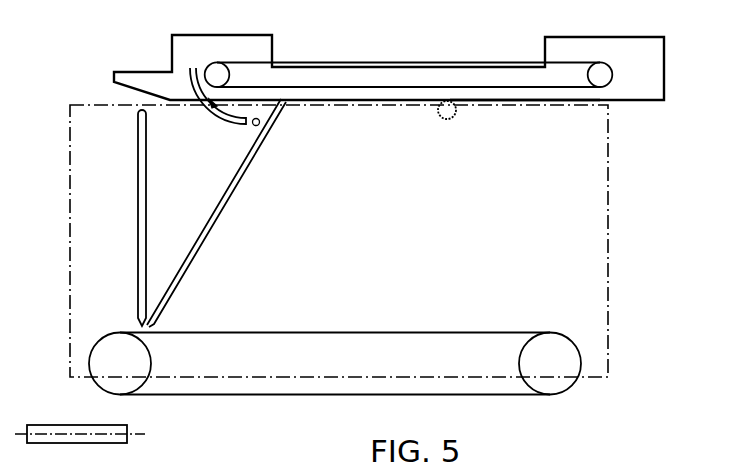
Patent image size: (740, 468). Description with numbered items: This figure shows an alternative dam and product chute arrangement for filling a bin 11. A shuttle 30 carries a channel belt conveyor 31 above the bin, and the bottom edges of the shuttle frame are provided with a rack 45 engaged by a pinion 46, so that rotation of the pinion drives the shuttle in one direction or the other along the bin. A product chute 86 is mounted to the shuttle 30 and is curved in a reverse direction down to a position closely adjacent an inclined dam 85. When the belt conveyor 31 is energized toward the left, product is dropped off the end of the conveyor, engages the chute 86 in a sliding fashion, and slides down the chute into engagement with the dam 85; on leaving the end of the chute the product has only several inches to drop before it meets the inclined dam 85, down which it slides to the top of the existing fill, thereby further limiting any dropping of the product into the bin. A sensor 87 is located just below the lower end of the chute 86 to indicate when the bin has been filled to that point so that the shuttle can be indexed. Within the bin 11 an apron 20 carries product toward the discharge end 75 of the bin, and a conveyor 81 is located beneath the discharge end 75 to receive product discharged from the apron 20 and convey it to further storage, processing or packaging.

The bin 11 is at (612, 220).
The apron 20 is at (348, 332).
The shuttle 30 is at (272, 35).
The channel belt conveyor 31 is at (415, 62).
The rack 45 is at (528, 102).
The pinion 46 is at (449, 119).
The discharge end 75 is at (98, 331).
The conveyor 81 is at (74, 410).
The dam 85 is at (252, 165).
The product chute 86 is at (217, 124).
The sensor 87 is at (260, 123).